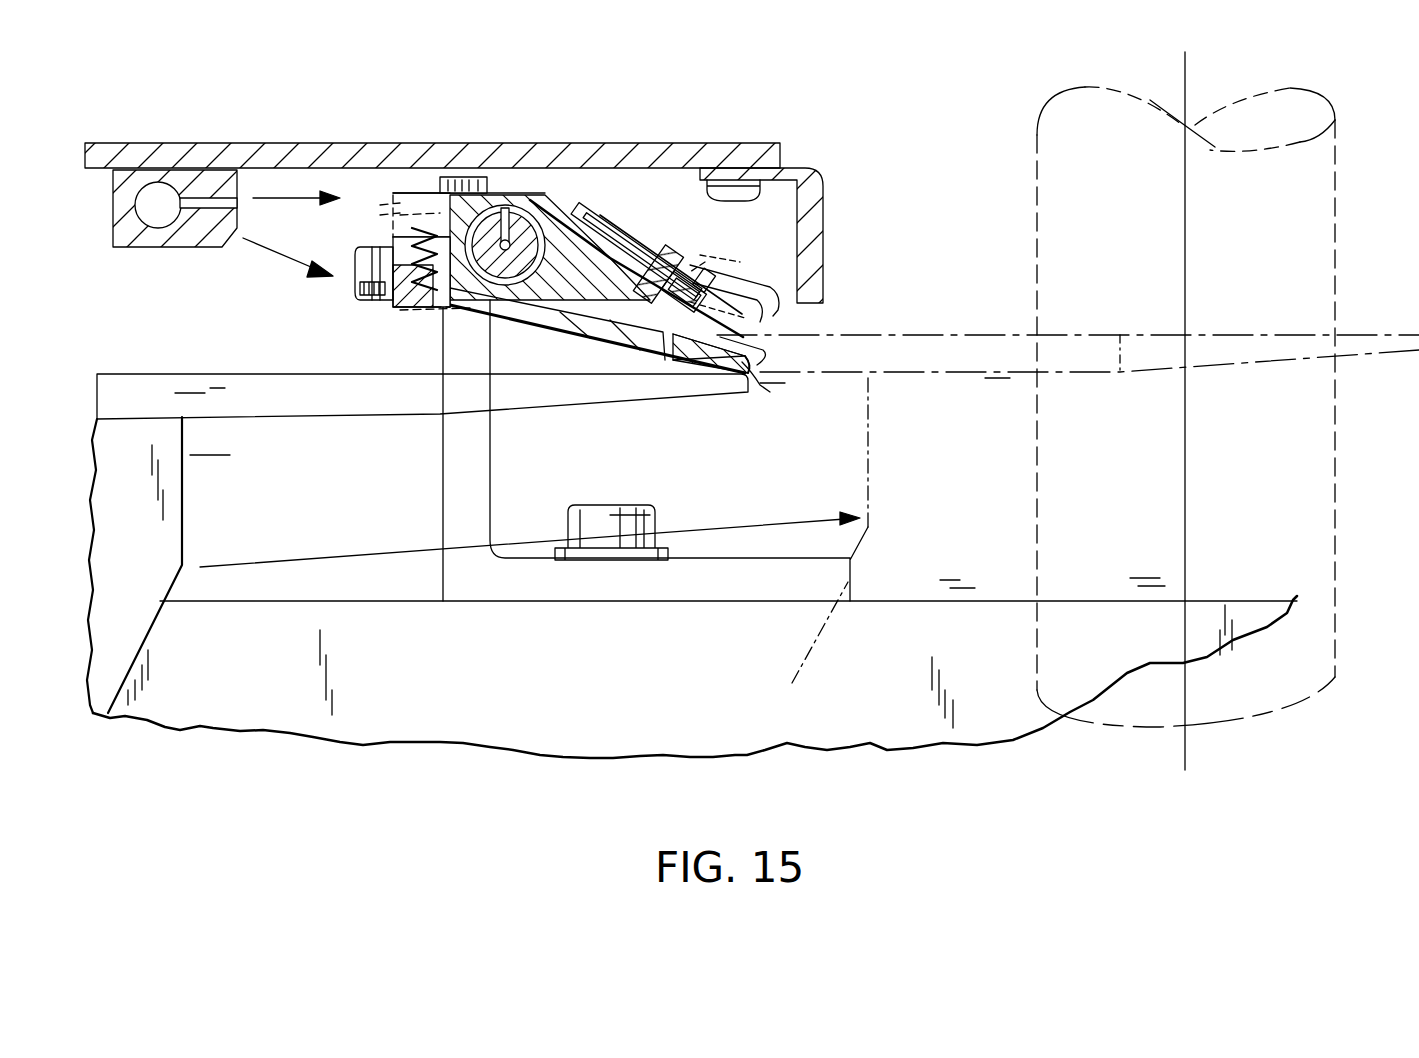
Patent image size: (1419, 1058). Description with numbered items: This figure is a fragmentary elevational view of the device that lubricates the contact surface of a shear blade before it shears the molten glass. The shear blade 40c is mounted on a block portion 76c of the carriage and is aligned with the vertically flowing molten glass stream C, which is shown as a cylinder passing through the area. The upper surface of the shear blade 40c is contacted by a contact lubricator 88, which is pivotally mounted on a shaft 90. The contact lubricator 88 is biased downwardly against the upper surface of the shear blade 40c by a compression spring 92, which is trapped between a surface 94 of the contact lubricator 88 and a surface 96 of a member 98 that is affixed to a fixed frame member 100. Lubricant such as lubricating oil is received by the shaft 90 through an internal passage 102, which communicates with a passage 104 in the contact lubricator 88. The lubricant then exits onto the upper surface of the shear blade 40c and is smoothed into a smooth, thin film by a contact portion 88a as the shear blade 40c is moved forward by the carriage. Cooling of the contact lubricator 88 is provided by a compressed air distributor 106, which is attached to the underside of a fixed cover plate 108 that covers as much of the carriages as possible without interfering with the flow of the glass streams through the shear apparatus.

The compressed air distributor 106 is at (215, 180).
The fixed cover plate 108 is at (305, 162).
The compression spring 92 is at (395, 225).
The surface of the lubricator 94 is at (425, 230).
The shaft 90 is at (496, 205).
The internal passage 102 is at (528, 220).
The contact lubricator 88 is at (588, 240).
The passage 104 is at (670, 325).
The surface of the member 96 is at (383, 302).
The member 98 is at (405, 305).
The shear blade 40c is at (292, 380).
The fixed frame member 100 is at (443, 480).
The contact portion 88a is at (781, 385).
The block portion 76c is at (135, 640).
The molten glass stream C is at (1335, 185).